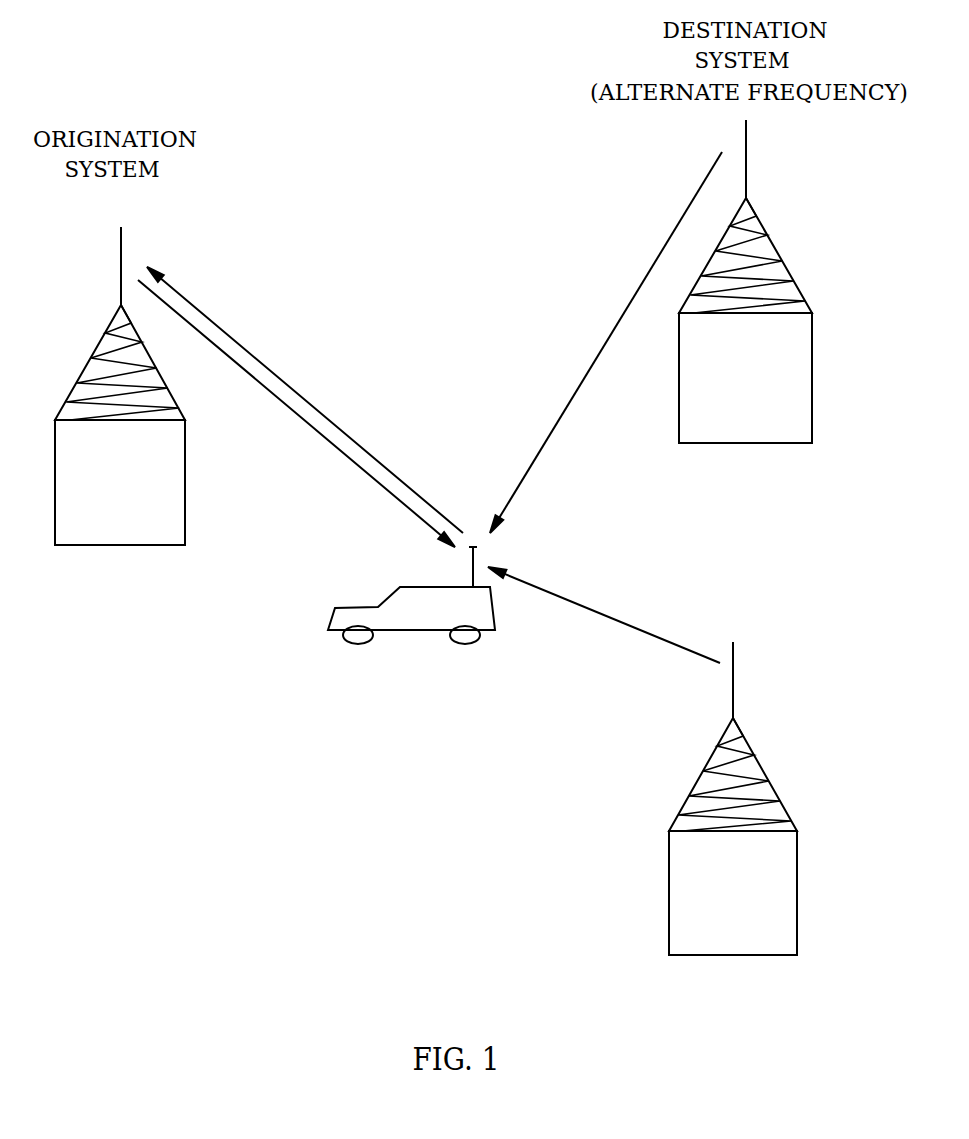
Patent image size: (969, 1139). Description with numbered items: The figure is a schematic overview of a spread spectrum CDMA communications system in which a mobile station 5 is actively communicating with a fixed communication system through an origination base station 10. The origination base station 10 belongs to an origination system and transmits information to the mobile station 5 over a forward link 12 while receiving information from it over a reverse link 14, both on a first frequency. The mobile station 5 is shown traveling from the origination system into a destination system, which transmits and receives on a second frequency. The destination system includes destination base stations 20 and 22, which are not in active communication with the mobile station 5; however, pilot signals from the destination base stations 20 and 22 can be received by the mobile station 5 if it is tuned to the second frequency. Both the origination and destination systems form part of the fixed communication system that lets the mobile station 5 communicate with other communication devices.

The mobile station 5 is at (357, 606).
The origination base station 10 is at (90, 357).
The forward link 12 is at (296, 413).
The reverse link 14 is at (305, 400).
The destination base station 20 is at (777, 251).
The destination base station 22 is at (765, 773).